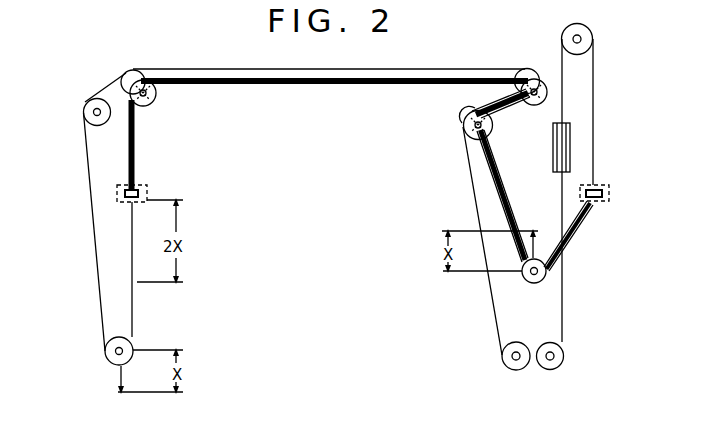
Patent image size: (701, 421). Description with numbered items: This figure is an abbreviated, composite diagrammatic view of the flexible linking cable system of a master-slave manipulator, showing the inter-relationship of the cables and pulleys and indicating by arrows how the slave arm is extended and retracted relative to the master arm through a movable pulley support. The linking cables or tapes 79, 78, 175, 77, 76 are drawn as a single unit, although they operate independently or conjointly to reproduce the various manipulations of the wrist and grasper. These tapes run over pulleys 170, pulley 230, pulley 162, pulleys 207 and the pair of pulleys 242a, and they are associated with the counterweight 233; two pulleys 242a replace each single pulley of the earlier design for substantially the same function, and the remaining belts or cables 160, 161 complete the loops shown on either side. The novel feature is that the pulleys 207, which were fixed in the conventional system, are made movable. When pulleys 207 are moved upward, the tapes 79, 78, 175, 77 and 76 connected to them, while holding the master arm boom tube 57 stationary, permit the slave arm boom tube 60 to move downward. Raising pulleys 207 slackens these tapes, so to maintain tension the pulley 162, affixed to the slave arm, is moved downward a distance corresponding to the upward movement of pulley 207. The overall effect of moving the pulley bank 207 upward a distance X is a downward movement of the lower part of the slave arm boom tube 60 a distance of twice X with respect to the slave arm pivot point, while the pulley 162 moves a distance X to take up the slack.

The pulley 170 is at (138, 72).
The cable 160 is at (323, 197).
The cable 161 is at (92, 190).
The linking cable or tape 76 is at (331, 175).
The linking cable or tape 77 is at (331, 175).
The linking cable or tape 78 is at (331, 175).
The linking cable or tape 79 is at (331, 175).
The linking cable or tape 175 is at (483, 173).
The slave arm boom tube 60 is at (127, 202).
The pulley 162 is at (110, 360).
The pulley 230 is at (593, 39).
The counterweight 233 is at (570, 143).
The master arm boom tube 57 is at (603, 192).
The pulley 207 is at (532, 283).
The pulleys 242a is at (543, 365).